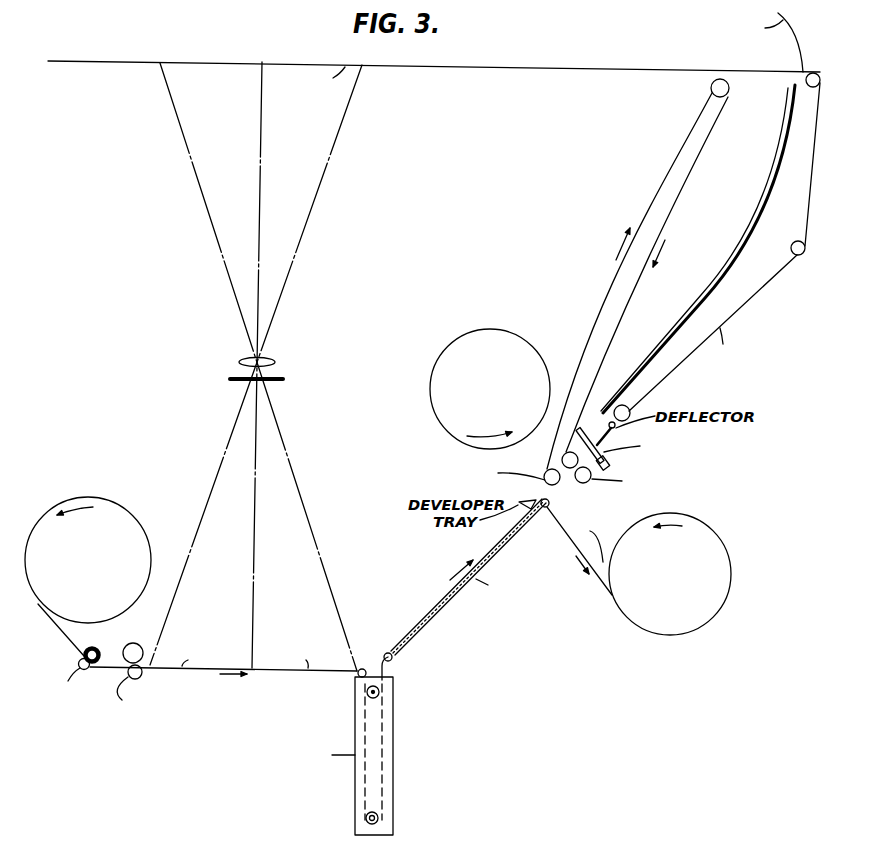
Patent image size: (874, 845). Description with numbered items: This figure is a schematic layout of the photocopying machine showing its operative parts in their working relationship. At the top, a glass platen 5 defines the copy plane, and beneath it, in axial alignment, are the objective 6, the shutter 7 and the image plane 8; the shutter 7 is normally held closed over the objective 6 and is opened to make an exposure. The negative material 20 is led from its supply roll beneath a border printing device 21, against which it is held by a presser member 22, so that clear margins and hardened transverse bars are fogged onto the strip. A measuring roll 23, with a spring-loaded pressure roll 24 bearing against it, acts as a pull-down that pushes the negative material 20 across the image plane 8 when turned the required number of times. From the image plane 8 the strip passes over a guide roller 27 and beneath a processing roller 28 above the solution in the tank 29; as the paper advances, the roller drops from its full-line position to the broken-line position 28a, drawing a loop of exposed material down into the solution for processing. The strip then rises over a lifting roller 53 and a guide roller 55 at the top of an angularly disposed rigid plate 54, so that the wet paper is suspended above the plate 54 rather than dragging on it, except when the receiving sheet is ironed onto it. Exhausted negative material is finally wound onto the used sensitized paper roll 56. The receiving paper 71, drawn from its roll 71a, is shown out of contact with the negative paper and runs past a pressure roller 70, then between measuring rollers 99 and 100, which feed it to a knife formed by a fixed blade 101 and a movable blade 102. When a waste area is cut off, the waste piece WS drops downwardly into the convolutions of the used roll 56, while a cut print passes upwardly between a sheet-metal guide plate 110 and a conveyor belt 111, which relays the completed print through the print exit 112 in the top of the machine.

The platen 5 is at (297, 62).
The objective 6 is at (268, 359).
The shutter 7 is at (278, 382).
The image plane 8 is at (267, 671).
The negative material 20 is at (367, 686).
The border printing device 21 is at (98, 647).
The presser member 22 is at (78, 662).
The measuring roll 23 is at (135, 644).
The pressure roll 24 is at (143, 676).
The guide roller 27 is at (363, 668).
The processing roller 28 is at (380, 692).
The broken-line position of processing roller 28a is at (381, 824).
The tank 29 is at (390, 718).
The lifting roller 53 is at (393, 657).
The rigid plate 54 is at (508, 549).
The guide roller 55 is at (545, 509).
The used sensitized paper roll 56 is at (683, 627).
The pressure roller 70 is at (546, 472).
The receiving paper 71 is at (588, 329).
The receiving paper roll 71a is at (492, 334).
The measuring roller 99 is at (571, 451).
The measuring roller 100 is at (581, 483).
The fixed blade 101 is at (609, 463).
The movable blade 102 is at (640, 377).
The sheet-metal guide plate 110 is at (666, 341).
The conveyor belt 111 is at (711, 295).
The print exit 112 is at (803, 61).
The waste piece of material WS is at (587, 537).